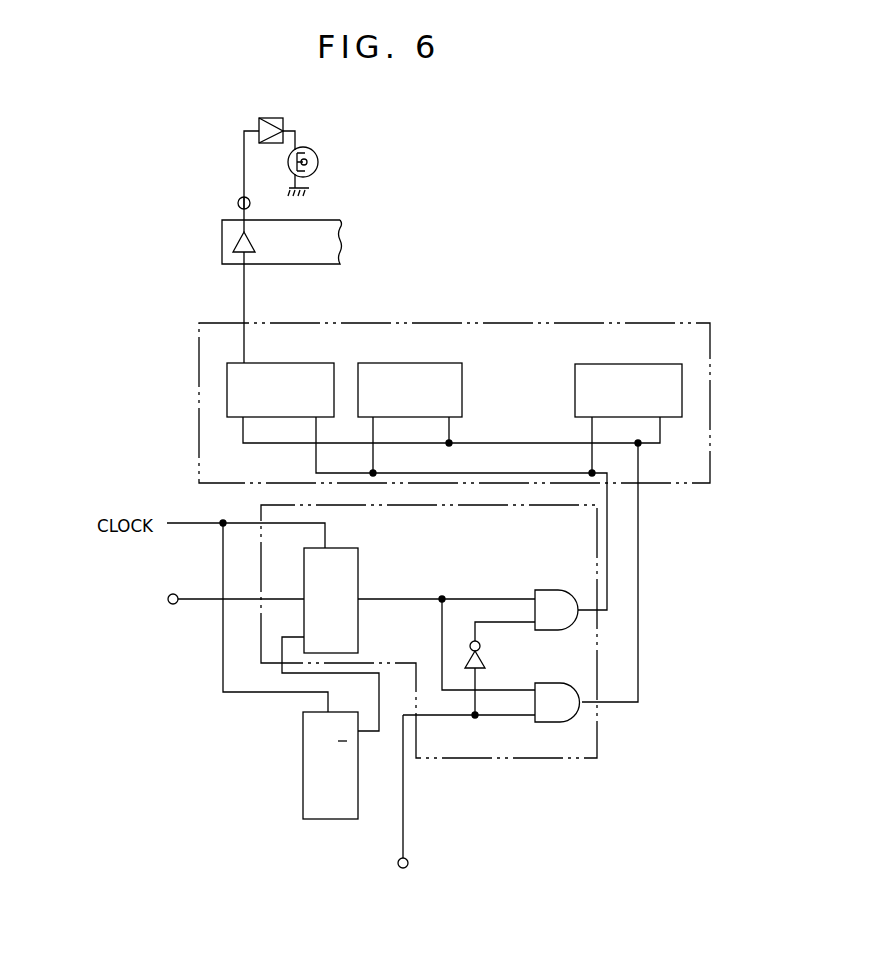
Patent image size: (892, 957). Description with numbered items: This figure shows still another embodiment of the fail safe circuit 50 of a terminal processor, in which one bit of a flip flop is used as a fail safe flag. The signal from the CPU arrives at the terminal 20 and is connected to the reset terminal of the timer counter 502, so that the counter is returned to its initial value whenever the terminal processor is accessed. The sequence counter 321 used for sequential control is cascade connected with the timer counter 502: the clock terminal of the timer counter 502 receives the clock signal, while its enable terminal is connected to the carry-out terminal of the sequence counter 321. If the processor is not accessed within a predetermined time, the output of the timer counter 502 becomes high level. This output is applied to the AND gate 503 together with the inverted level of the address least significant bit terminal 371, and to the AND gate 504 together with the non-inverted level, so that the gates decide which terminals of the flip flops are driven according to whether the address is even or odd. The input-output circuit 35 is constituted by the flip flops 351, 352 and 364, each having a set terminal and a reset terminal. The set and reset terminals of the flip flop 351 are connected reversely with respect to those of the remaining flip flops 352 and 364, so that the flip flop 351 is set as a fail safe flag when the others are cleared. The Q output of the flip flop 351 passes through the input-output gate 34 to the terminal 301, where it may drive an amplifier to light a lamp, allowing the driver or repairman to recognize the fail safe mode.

The input-output terminal 301 is at (237, 205).
The input-output gate circuit 34 is at (222, 249).
The input-output circuit 35 is at (678, 322).
The flip flop 351 is at (288, 352).
The flip flop 352 is at (400, 363).
The flip flop 364 is at (625, 364).
The terminal 20 is at (174, 594).
The fail safe circuit 50 is at (598, 746).
The timer counter 502 is at (360, 578).
The AND gate 503 is at (554, 589).
The AND gate 504 is at (574, 730).
The sequence counter 321 is at (304, 748).
The address least significant bit terminal 371 is at (408, 866).